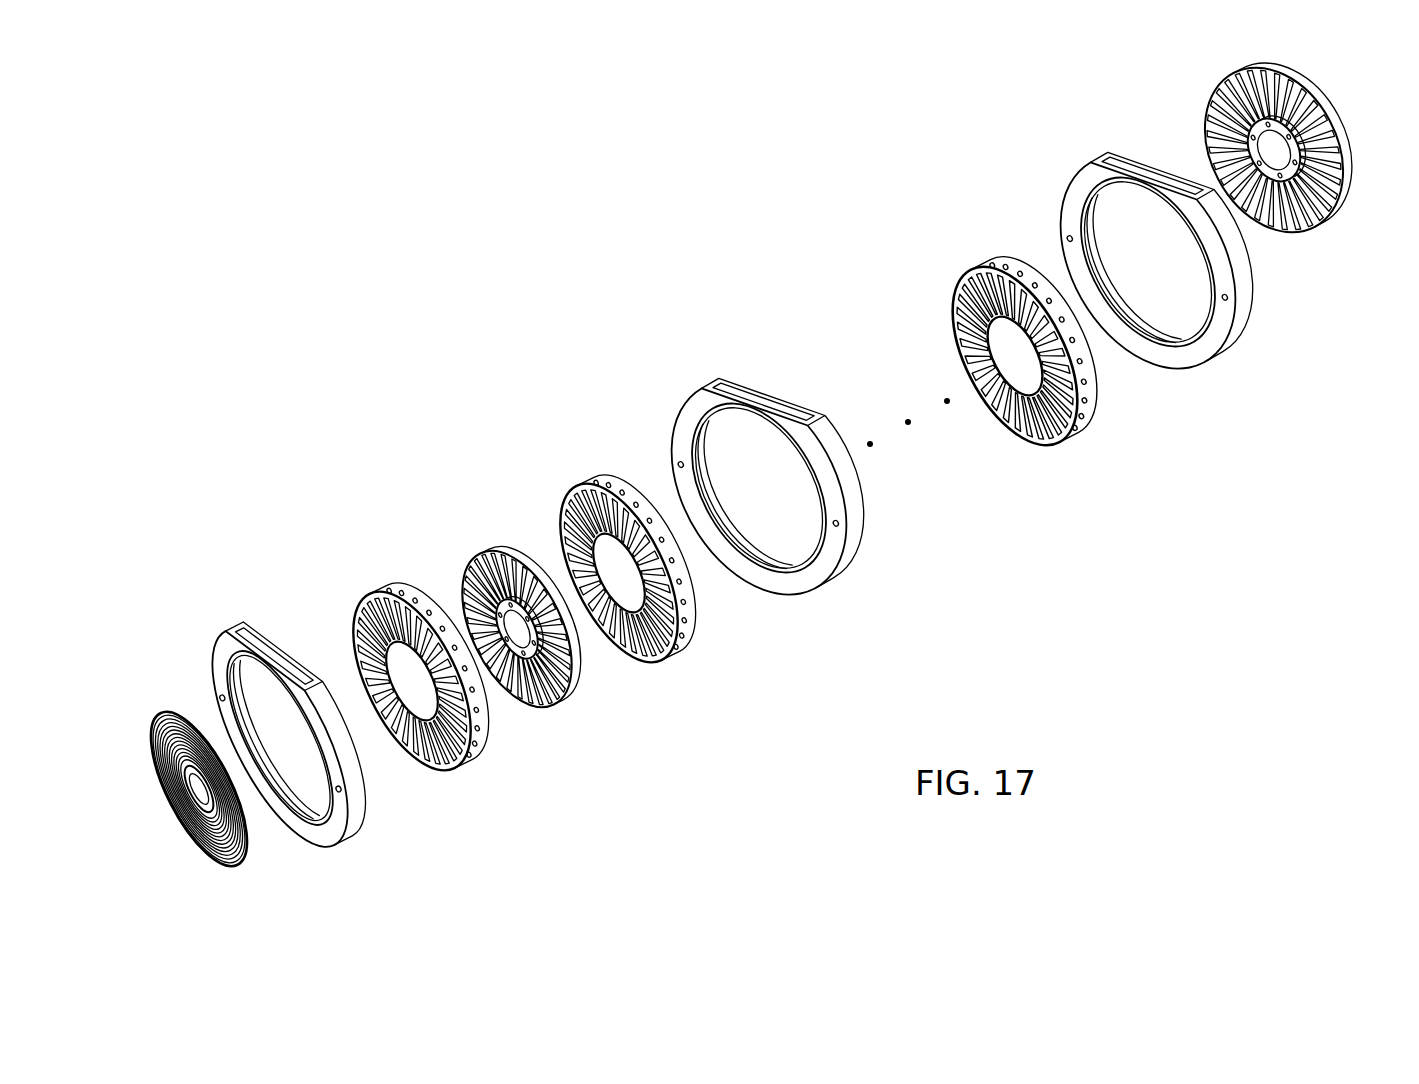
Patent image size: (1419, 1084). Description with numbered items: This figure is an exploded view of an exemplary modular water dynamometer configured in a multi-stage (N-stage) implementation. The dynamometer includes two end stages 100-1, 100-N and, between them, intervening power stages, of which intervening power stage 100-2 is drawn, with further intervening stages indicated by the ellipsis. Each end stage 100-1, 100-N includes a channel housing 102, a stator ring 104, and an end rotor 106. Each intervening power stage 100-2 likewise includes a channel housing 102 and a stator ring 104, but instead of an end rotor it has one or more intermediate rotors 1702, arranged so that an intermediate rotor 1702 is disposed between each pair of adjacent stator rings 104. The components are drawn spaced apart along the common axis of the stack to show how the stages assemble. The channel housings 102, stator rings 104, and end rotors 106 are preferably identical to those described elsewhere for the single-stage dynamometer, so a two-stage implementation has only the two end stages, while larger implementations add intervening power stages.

The end stage 100-1 is at (508, 749).
The intervening power stage 100-2 is at (850, 588).
The end stage 100-N is at (1380, 254).
The channel housing 102 is at (244, 627).
The stator ring 104 is at (389, 590).
The end rotor 106 is at (166, 709).
The intermediate rotor 1702 is at (482, 547).